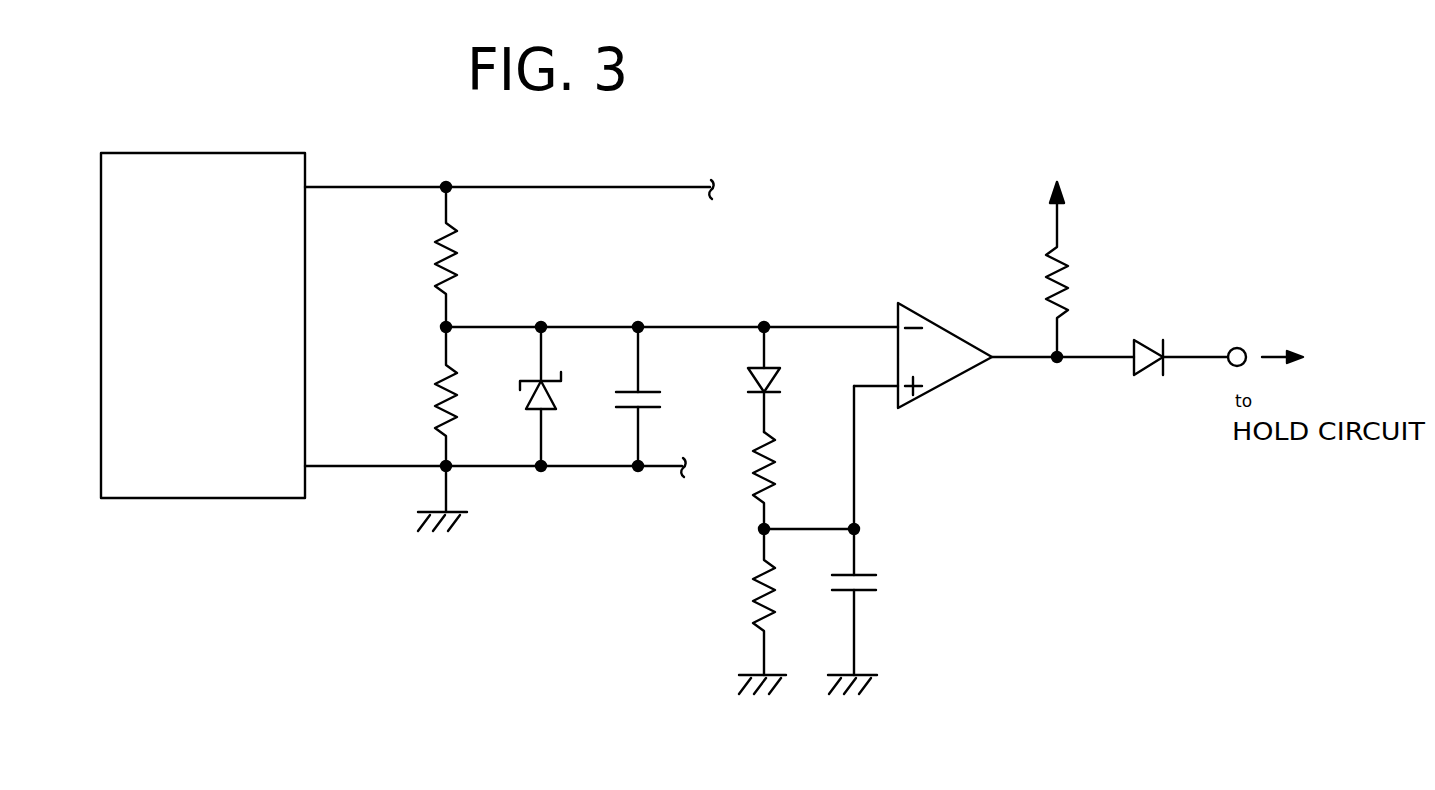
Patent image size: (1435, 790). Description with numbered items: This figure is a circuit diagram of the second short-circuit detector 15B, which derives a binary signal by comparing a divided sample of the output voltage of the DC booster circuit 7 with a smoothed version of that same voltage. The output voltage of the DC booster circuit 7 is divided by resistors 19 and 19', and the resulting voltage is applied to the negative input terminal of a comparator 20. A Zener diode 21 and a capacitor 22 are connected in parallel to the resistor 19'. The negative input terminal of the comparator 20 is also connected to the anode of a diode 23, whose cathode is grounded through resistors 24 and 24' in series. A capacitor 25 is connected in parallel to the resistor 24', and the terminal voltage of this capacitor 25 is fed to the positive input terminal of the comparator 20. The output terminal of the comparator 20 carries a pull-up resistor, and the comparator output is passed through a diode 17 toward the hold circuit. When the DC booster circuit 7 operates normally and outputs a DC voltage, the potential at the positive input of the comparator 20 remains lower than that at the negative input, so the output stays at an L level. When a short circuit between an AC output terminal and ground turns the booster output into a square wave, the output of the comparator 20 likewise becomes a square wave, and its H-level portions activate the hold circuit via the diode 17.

The DC booster circuit 7 is at (185, 153).
The second short-circuit detector 15B is at (929, 221).
The diode 17 is at (1147, 341).
The resistor 19 is at (407, 257).
The resistor 19' is at (407, 429).
The comparator 20 is at (955, 380).
The Zener diode 21 is at (524, 388).
The capacitor 22 is at (628, 409).
The diode 23 is at (748, 378).
The resistor 24 is at (731, 482).
The resistor 24' is at (733, 611).
The capacitor 25 is at (866, 573).